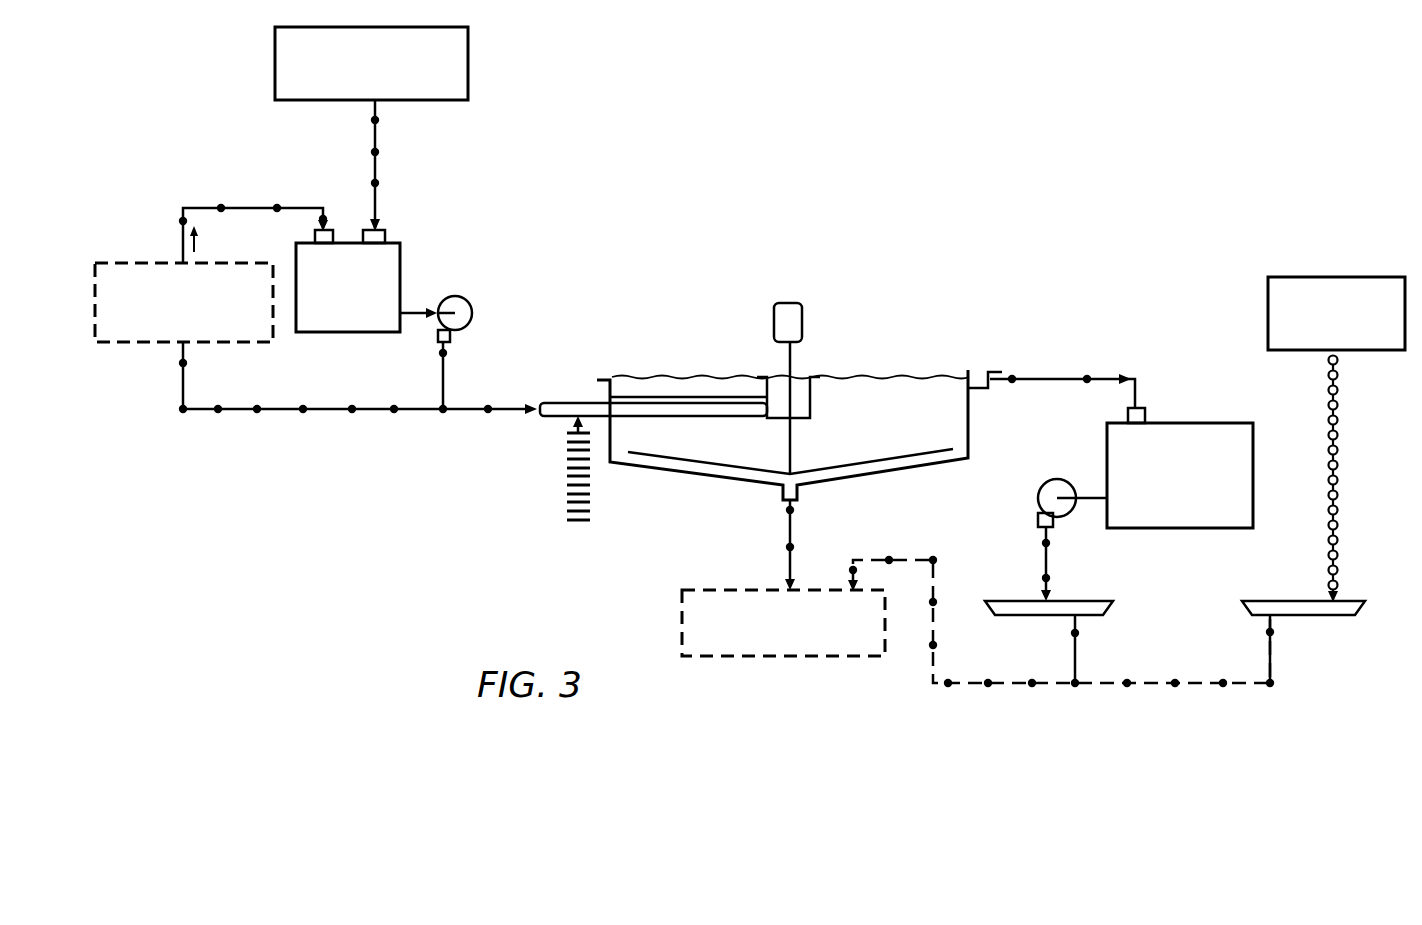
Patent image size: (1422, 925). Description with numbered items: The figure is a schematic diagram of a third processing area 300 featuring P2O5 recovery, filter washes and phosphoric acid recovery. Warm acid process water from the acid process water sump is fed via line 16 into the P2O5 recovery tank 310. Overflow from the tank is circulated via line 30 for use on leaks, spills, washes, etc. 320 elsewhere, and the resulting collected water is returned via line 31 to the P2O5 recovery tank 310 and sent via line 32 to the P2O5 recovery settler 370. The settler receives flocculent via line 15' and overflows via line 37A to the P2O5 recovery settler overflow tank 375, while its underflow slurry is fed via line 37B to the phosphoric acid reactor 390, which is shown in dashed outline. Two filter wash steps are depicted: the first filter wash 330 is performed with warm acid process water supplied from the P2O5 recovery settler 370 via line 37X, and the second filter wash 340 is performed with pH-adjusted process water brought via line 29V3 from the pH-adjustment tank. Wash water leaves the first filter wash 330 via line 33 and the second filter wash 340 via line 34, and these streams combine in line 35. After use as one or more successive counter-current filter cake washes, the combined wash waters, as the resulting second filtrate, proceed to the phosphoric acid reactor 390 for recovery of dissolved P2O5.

The third processing area 300 is at (1236, 246).
The line 16 is at (383, 207).
The line 31 is at (182, 240).
The leaks, spills, washes, etc. 320 is at (151, 343).
The P2O5 recovery tank 310 is at (326, 333).
The line 30 is at (352, 409).
The line 32 is at (505, 409).
The line 15' is at (578, 484).
The P2O5 recovery settler 370 is at (962, 460).
The line 37A is at (1062, 379).
The P2O5 recovery settler overflow tank 375 is at (1215, 423).
The line 29V3 is at (1328, 418).
The line 37B is at (795, 546).
The phosphoric acid reactor 390 is at (740, 659).
The line 35 is at (922, 636).
The line 37X is at (1045, 560).
The filter wash No. 1 330 is at (1038, 615).
The line 33 is at (1076, 658).
The line 34 is at (1270, 666).
The filter wash No. 2 340 is at (1302, 615).